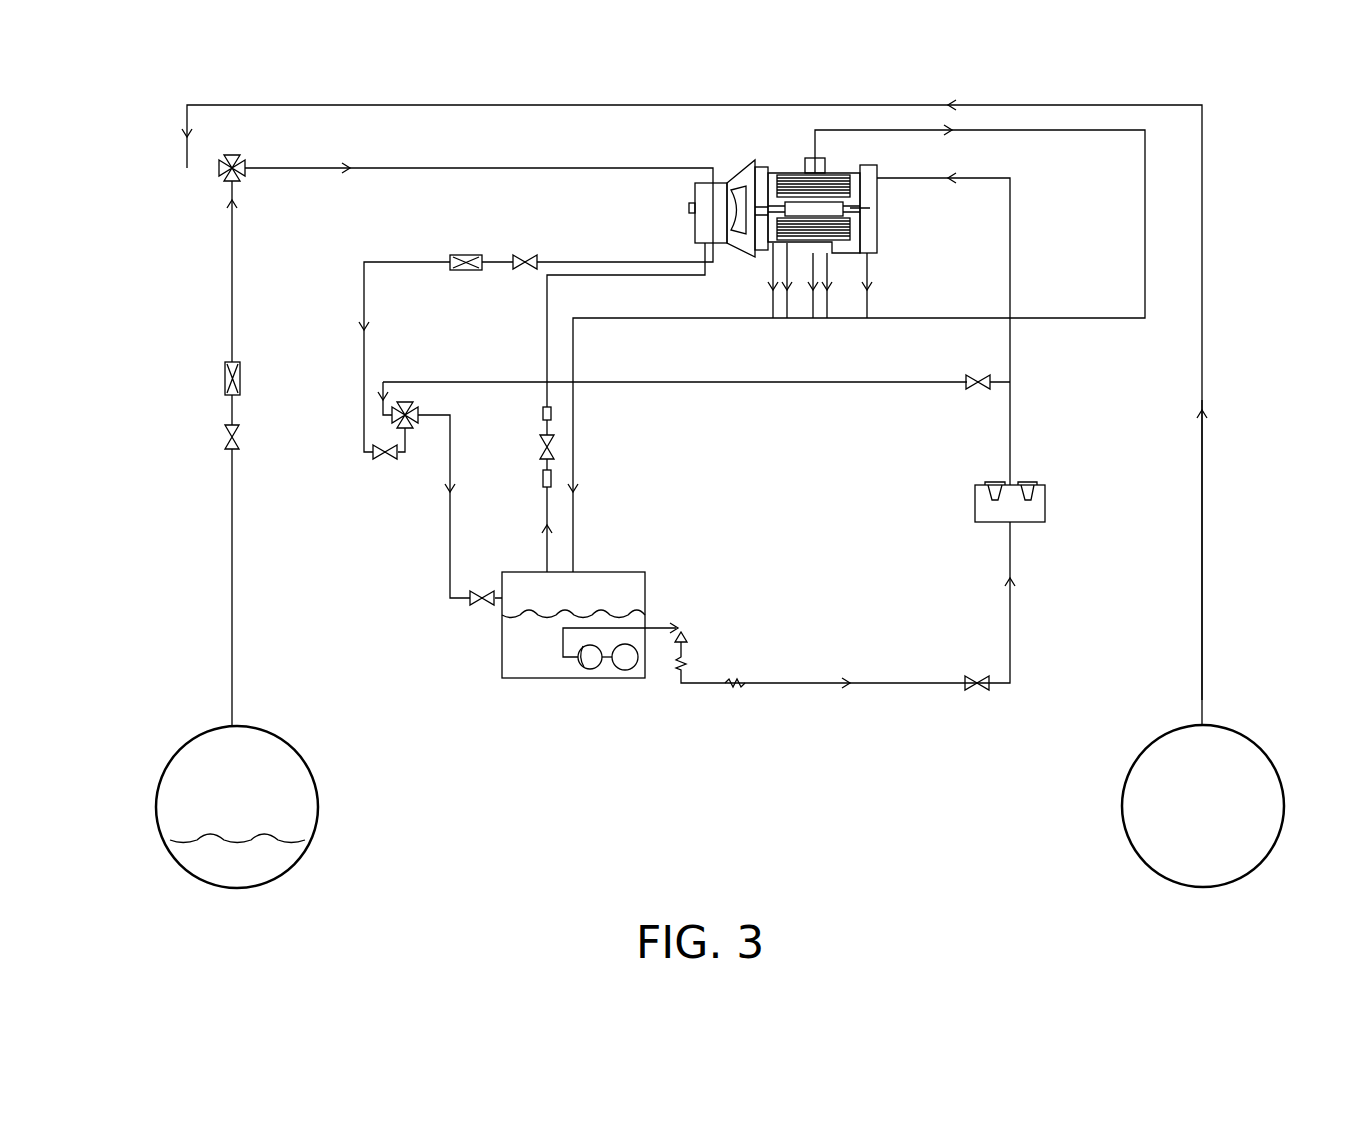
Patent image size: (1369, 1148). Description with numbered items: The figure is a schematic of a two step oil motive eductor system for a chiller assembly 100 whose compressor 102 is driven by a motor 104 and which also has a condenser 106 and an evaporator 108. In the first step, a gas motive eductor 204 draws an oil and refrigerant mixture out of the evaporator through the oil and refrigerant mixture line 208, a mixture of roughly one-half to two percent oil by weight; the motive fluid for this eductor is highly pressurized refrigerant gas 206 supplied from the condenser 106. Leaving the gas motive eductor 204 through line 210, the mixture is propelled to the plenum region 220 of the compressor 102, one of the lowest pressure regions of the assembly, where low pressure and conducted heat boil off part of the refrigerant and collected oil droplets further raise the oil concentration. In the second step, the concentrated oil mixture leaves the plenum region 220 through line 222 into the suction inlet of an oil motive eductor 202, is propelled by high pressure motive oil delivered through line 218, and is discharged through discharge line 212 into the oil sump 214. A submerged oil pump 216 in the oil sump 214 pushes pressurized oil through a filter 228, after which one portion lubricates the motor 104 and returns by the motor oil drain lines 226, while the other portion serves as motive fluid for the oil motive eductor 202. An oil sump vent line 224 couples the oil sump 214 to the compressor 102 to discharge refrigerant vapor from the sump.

The chiller assembly 100 is at (122, 98).
The compressor 102 is at (768, 181).
The motor 104 is at (878, 222).
The condenser 106 is at (1245, 735).
The evaporator 108 is at (187, 742).
The oil motive eductor 202 is at (430, 412).
The gas motive eductor 204 is at (226, 173).
The highly pressurized refrigerant gas 206 is at (1202, 548).
The oil and refrigerant mixture line 208 is at (232, 495).
The line 210 is at (463, 172).
The discharge line 212 is at (452, 545).
The oil sump 214 is at (622, 572).
The submerged oil pump 216 is at (621, 678).
The high pressure motive oil line 218 is at (733, 388).
The plenum region 220 is at (695, 193).
The line 222 is at (363, 318).
The oil sump vent line 224 is at (546, 355).
The motor oil drain lines 226 is at (576, 452).
The filter 228 is at (1025, 522).